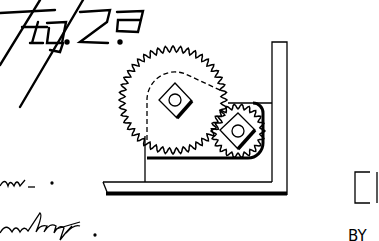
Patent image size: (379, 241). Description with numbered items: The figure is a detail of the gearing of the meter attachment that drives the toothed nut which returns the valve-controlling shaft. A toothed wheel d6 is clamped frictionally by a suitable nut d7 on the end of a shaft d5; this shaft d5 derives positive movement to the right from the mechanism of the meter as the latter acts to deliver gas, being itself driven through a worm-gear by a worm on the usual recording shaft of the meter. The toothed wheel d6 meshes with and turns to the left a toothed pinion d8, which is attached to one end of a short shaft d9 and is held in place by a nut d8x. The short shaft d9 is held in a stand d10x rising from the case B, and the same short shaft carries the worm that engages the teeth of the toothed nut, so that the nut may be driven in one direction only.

The case B is at (288, 72).
The shaft d5 is at (162, 104).
The toothed wheel d6 is at (207, 67).
The nut d7 is at (168, 112).
The toothed pinion d8 is at (236, 111).
The nut d8x is at (252, 120).
The short shaft d9 is at (255, 128).
The stand d10x is at (212, 152).